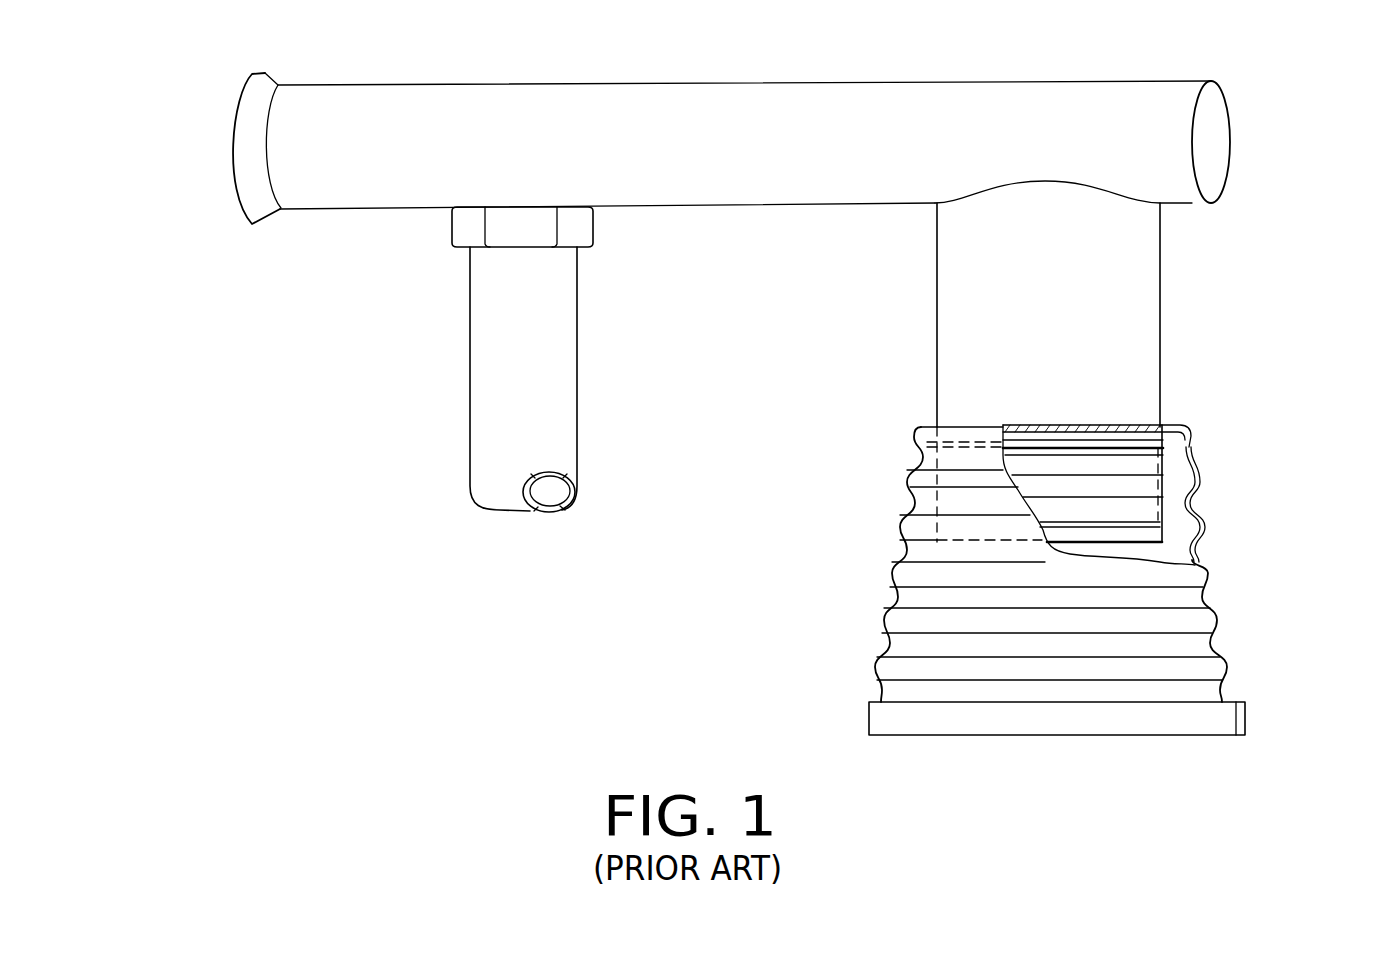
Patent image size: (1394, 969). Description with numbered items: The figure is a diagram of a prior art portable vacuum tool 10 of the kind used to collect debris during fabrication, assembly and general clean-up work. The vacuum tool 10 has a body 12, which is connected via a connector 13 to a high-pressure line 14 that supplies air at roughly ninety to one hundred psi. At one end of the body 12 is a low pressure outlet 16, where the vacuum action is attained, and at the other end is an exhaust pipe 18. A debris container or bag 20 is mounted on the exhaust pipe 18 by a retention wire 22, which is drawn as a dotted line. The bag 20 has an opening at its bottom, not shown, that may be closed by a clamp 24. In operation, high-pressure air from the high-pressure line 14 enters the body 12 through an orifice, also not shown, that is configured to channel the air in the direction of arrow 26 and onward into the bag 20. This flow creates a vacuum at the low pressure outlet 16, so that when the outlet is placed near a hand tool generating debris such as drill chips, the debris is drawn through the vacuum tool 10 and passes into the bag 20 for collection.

The vacuum tool 10 is at (307, 354).
The body 12 is at (732, 82).
The connector 13 is at (451, 229).
The high-pressure line 14 is at (578, 343).
The low pressure outlet 16 is at (232, 94).
The exhaust pipe 18 is at (1162, 315).
The debris container or bag 20 is at (1208, 567).
The retention wire 22 is at (1123, 440).
The clamp 24 is at (1247, 685).
The arrow 26 is at (618, 149).